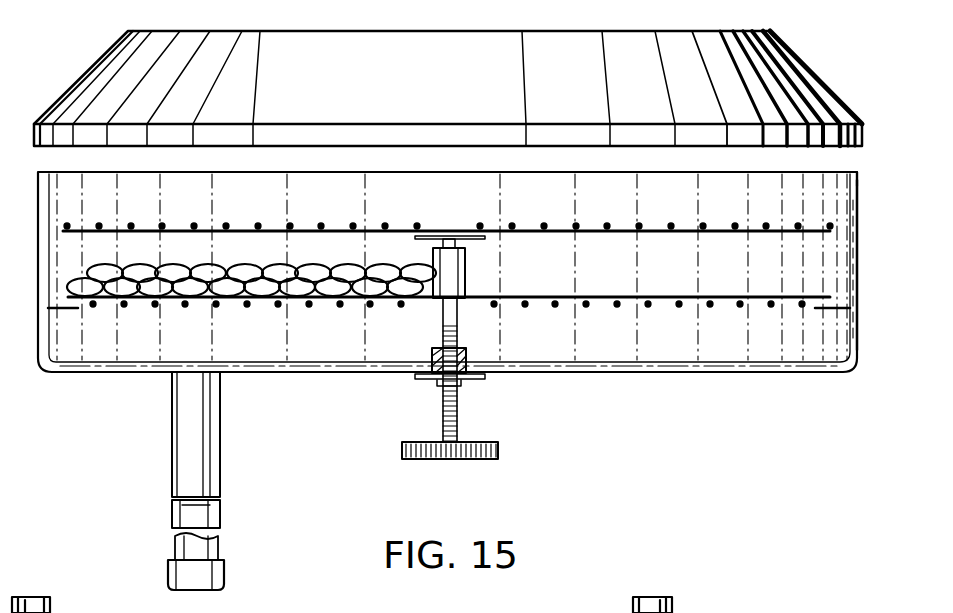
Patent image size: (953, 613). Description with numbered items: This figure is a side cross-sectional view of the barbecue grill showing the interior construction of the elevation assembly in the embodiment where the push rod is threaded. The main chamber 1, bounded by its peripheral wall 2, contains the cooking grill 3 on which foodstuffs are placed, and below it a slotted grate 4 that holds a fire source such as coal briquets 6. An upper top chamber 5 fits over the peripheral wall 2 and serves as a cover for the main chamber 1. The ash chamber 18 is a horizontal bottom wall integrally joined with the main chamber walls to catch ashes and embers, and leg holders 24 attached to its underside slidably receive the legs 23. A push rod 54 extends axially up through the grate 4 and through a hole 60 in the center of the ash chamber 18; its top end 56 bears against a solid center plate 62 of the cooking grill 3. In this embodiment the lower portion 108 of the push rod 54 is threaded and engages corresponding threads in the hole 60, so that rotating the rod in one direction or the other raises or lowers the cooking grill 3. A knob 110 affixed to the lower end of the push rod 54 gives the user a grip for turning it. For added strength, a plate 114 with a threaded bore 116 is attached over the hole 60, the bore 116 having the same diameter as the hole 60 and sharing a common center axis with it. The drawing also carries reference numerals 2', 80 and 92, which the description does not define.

The main chamber 1 is at (650, 173).
The peripheral wall 2 is at (865, 265).
The top edge of side wall 2' is at (863, 167).
The cooking grill 3 is at (684, 236).
The slotted grate 4 is at (592, 296).
The upper top chamber 5 is at (808, 66).
The coal briquets 6 is at (277, 270).
The ash chamber 18 is at (760, 375).
The legs 23 is at (220, 520).
The leg holders 24 is at (188, 383).
The push rod 54 is at (458, 428).
The top end of push rod 56 is at (485, 240).
The hole 60 is at (437, 352).
The solid center plate 62 is at (451, 236).
The height adjustment assembly 80 is at (470, 403).
The inner bottom 92 is at (635, 375).
The lower portion of push rod 108 is at (458, 403).
The knob 110 is at (440, 461).
The plate 114 is at (417, 380).
The threaded bore 116 is at (440, 383).